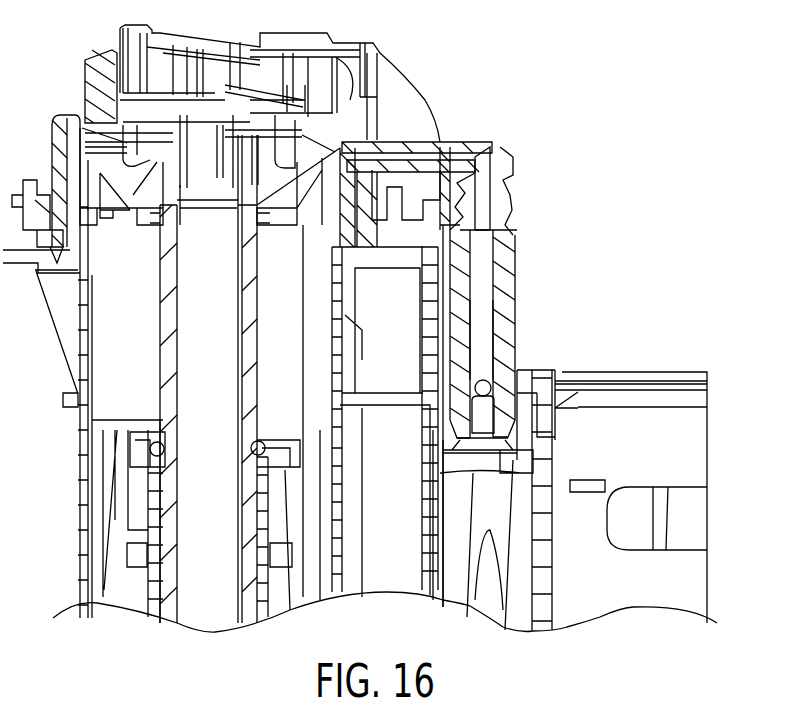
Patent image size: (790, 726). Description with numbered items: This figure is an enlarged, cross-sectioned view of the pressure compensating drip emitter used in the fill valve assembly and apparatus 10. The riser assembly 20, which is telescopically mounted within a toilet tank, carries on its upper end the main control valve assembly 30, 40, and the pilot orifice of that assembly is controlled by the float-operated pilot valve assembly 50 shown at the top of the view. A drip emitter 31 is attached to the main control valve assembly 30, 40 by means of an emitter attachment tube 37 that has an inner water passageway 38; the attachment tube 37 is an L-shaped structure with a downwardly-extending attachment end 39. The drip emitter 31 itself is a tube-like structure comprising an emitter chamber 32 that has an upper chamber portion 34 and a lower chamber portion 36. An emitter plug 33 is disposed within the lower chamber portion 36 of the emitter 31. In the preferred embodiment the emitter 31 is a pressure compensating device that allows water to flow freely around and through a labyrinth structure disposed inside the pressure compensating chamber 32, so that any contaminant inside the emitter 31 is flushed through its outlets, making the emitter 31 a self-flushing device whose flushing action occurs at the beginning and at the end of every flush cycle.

The fill valve assembly and apparatus 10 is at (525, 79).
The riser assembly 20 is at (84, 537).
The main control valve assembly 30 is at (28, 190).
The drip emitter 31 is at (515, 280).
The emitter chamber 32 is at (486, 344).
The emitter plug 33 is at (478, 428).
The upper chamber portion 34 is at (485, 242).
The lower chamber portion 36 is at (473, 396).
The emitter attachment tube 37 is at (478, 140).
The inner water passageway 38 is at (476, 157).
The attachment end 39 is at (496, 207).
The main control valve assembly 40 is at (93, 85).
The float-operated pilot valve assembly 50 is at (423, 115).